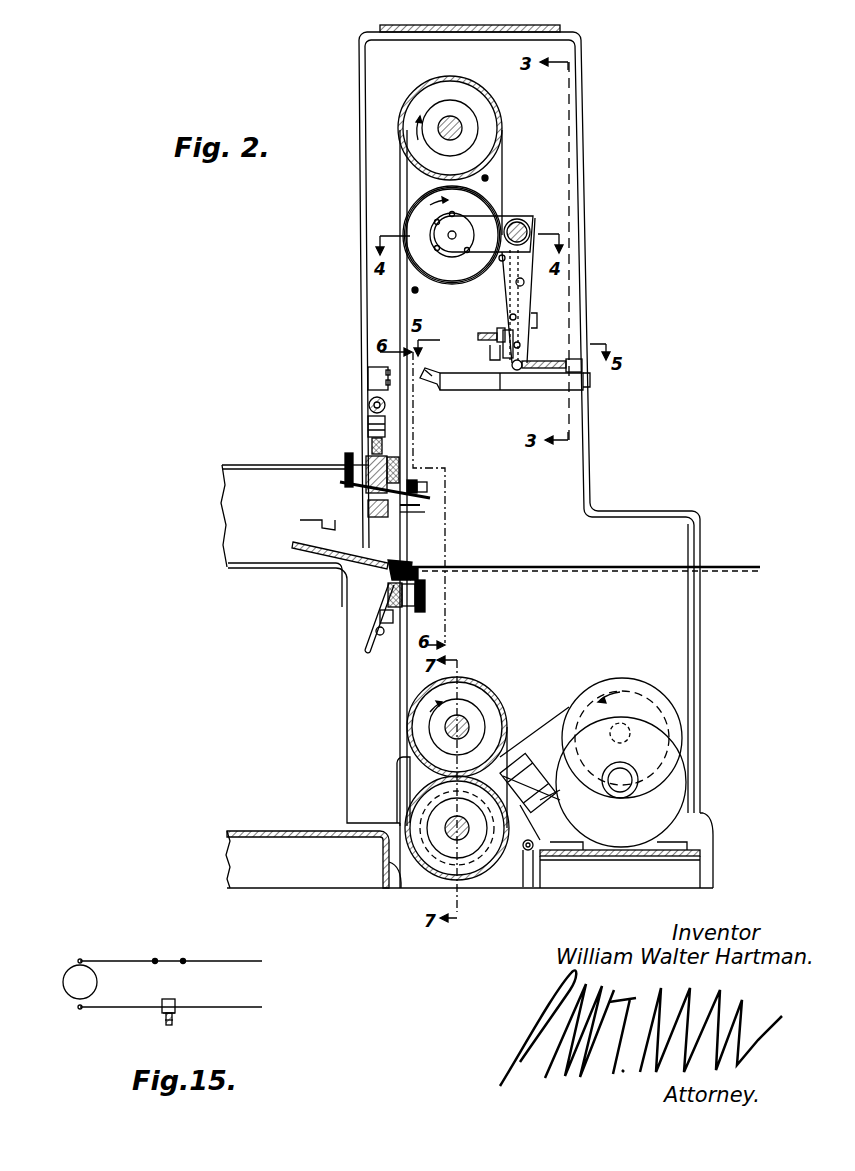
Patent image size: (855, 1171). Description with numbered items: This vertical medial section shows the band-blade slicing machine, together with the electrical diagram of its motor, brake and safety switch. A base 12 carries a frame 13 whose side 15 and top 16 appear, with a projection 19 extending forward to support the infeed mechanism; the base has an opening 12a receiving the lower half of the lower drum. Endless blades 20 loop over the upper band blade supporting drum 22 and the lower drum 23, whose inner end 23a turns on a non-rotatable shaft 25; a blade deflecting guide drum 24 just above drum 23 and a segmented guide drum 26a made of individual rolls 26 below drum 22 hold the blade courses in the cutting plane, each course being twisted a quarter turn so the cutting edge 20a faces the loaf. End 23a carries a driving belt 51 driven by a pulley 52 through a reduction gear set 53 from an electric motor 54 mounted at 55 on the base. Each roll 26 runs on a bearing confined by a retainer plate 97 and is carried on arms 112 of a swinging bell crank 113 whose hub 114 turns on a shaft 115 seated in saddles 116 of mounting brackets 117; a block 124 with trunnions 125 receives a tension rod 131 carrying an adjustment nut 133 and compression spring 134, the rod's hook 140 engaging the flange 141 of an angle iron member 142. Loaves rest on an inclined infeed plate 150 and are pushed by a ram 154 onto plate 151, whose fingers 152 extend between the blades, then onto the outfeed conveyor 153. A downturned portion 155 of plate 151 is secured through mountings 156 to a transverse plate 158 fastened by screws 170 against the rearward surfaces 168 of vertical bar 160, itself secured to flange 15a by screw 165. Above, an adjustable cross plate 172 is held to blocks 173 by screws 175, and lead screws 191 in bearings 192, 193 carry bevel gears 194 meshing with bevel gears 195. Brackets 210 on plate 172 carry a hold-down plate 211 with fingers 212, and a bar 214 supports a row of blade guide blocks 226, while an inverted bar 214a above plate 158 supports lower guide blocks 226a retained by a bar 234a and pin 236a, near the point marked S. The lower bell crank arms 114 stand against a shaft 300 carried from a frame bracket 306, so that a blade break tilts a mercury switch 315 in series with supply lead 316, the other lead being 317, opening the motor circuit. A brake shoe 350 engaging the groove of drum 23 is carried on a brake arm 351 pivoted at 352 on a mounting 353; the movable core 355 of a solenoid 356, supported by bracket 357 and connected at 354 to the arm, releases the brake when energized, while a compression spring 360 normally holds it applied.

In FIG. 2, the base 12 is at (262, 831).
In FIG. 2, the opening 12a is at (398, 872).
In FIG. 2, the frame 13 is at (590, 138).
In FIG. 2, the frame side 15 is at (583, 188).
In FIG. 2, the flange 15a is at (358, 292).
In FIG. 2, the top 16 is at (476, 26).
In FIG. 2, the projection 19 is at (250, 470).
In FIG. 2, the endless blades 20 is at (398, 176).
In FIG. 2, the cutting edge 20a is at (400, 386).
In FIG. 2, the upper band blade supporting drum 22 is at (494, 110).
In FIG. 2, the lower band blade supporting drum 23 is at (470, 852).
In FIG. 2, the inner drum end 23a is at (462, 860).
In FIG. 2, the blade deflecting guide drum 24 is at (495, 700).
In FIG. 2, the non-rotatable shaft 25 is at (452, 836).
In FIG. 2, the individual drum or roll 26 is at (488, 212).
In FIG. 2, the segmented blade deflecting guide drum 26a is at (492, 198).
In FIG. 2, the driving belt 51 is at (562, 706).
In FIG. 2, the pulley 52 is at (612, 690).
In FIG. 2, the reduction gear set 53 is at (645, 690).
In FIG. 2, the electric motor 54 is at (652, 720).
In FIG. 15, the electric motor 54 is at (62, 982).
In FIG. 2, the motor mounting 55 is at (712, 830).
In FIG. 2, the circular retainer plate 97 is at (437, 238).
In FIG. 2, the bell crank arm 112 is at (508, 216).
In FIG. 2, the swinging bell crank 113 is at (532, 300).
In FIG. 2, the bell crank hub 114 is at (537, 322).
In FIG. 2, the horizontal shaft 115 is at (577, 191).
In FIG. 2, the saddle 116 is at (528, 226).
In FIG. 2, the mounting bracket 117 is at (525, 279).
In FIG. 2, the block 124 is at (515, 350).
In FIG. 2, the trunnion 125 is at (525, 372).
In FIG. 2, the tension rod 131 is at (500, 390).
In FIG. 2, the tension adjustment nut 133 is at (590, 380).
In FIG. 2, the compression spring 134 is at (584, 368).
In FIG. 2, the hook 140 is at (432, 385).
In FIG. 2, the flange 141 is at (490, 366).
In FIG. 2, the angle iron member 142 is at (448, 388).
In FIG. 2, the infeed loaf supporting plate 150 is at (320, 548).
In FIG. 2, the loaf support plate 151 is at (412, 560).
In FIG. 2, the fingers 152 is at (413, 566).
In FIG. 2, the outfeed support or conveyor 153 is at (538, 567).
In FIG. 2, the ram 154 is at (340, 540).
In FIG. 2, the plate portion 155 is at (388, 612).
In FIG. 2, the mountings 156 is at (375, 640).
In FIG. 2, the transverse plate 158 is at (386, 620).
In FIG. 2, the vertical supporting bar 160 is at (368, 375).
In FIG. 2, the screw 165 is at (374, 397).
In FIG. 2, the rearward surface 168 is at (386, 383).
In FIG. 2, the manually operable screw 170 is at (426, 597).
In FIG. 2, the second cross plate 172 is at (399, 462).
In FIG. 2, the block 173 is at (372, 447).
In FIG. 2, the manually operable screw 175 is at (366, 465).
In FIG. 2, the vertical lead screw 191 is at (370, 445).
In FIG. 2, the upper bearing 192 is at (366, 450).
In FIG. 2, the lower bearing 193 is at (425, 512).
In FIG. 2, the bevel gear 194 is at (363, 455).
In FIG. 2, the bevel gear 195 is at (360, 460).
In FIG. 2, the bracket 210 is at (418, 485).
In FIG. 2, the loaf hold-down plate 211 is at (346, 482).
In FIG. 2, the fingers 212 is at (420, 503).
In FIG. 2, the bar 214 is at (430, 497).
In FIG. 2, the bar 214a is at (392, 578).
In FIG. 2, the blade guide block 226 is at (428, 490).
In FIG. 2, the lower blade guide block 226a is at (426, 590).
In FIG. 2, the bar 234a is at (430, 560).
In FIG. 2, the pin 236a is at (425, 565).
In FIG. 2, the shaft 300 is at (478, 337).
In FIG. 2, the frame bracket 306 is at (497, 326).
In FIG. 15, the mercury switch 315 is at (165, 961).
In FIG. 15, the electric current supply lead 316 is at (125, 961).
In FIG. 15, the supply lead 317 is at (232, 1007).
In FIG. 2, the brake shoe 350 is at (512, 745).
In FIG. 15, the brake shoe 350 is at (168, 1026).
In FIG. 2, the brake arm 351 is at (533, 880).
In FIG. 2, the pivot 352 is at (540, 870).
In FIG. 2, the mounting 353 is at (533, 865).
In FIG. 2, the pivotal connection 354 is at (516, 750).
In FIG. 2, the movable core 355 is at (560, 788).
In FIG. 15, the movable core 355 is at (174, 1020).
In FIG. 2, the solenoid 356 is at (522, 755).
In FIG. 15, the solenoid 356 is at (176, 1002).
In FIG. 2, the bracket 357 is at (545, 812).
In FIG. 2, the compression spring 360 is at (545, 792).
In FIG. 15, the compression spring 360 is at (163, 1012).
In FIG. 2, the saw blade path S is at (395, 585).